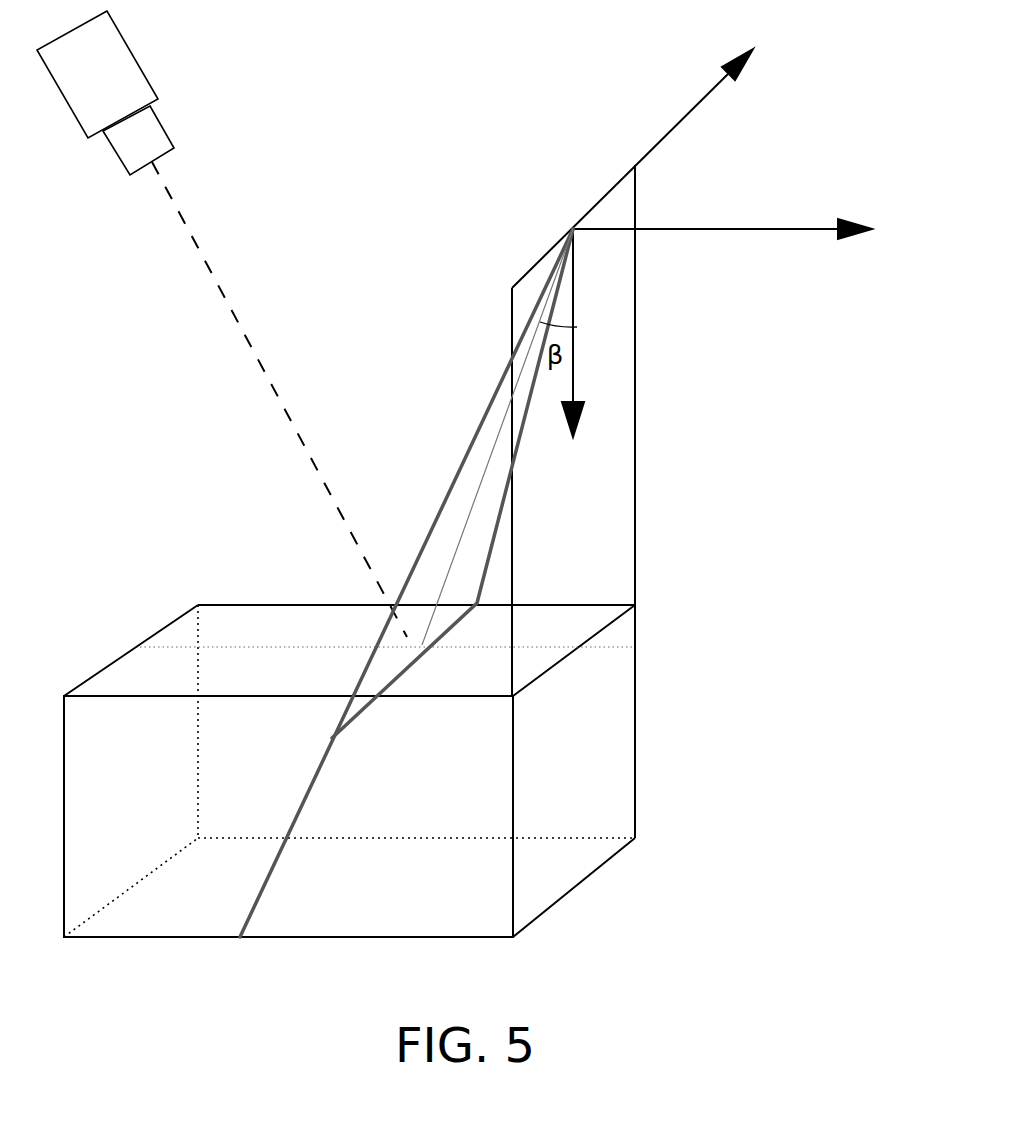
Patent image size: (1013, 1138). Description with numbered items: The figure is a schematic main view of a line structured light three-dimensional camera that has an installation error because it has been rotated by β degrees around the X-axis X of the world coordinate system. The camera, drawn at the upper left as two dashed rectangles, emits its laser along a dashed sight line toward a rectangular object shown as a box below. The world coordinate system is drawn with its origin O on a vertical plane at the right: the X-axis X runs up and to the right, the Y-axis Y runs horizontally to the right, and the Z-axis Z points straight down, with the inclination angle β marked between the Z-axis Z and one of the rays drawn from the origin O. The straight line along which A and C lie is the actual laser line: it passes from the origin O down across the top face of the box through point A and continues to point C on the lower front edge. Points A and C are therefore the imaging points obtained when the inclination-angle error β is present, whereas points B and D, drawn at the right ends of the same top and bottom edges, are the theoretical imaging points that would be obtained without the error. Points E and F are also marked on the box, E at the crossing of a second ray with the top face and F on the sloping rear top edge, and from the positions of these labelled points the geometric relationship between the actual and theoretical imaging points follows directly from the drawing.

The origin of coordinate system O is at (572, 163).
The X-axis X is at (672, 45).
The Y axis Y is at (823, 170).
The Z axis Z is at (627, 388).
The imaging point A is at (307, 722).
The theoretical imaging point B is at (493, 720).
The imaging point C is at (208, 902).
The theoretical imaging point D is at (484, 903).
The point E is at (433, 670).
The point F is at (591, 668).